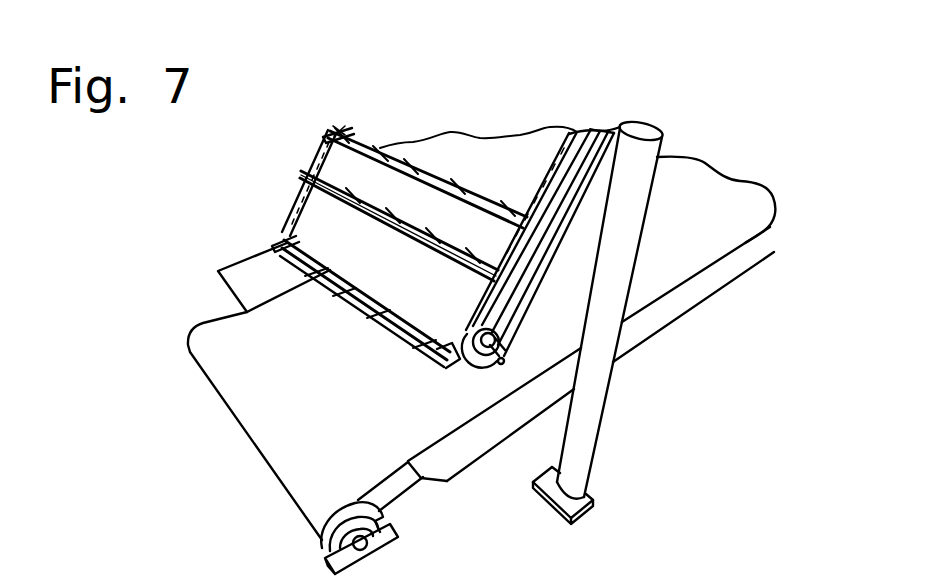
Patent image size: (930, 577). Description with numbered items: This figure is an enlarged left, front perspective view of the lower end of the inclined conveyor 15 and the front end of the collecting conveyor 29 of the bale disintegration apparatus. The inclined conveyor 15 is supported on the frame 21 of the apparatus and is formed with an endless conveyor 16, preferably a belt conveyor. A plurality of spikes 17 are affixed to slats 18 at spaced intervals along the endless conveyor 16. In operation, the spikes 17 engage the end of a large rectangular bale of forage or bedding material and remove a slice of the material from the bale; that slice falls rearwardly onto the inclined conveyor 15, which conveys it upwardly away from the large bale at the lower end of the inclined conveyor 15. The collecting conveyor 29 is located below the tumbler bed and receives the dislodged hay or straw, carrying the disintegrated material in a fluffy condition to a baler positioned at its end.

The inclined conveyor 15 is at (455, 148).
The endless conveyor 16 is at (530, 143).
The spikes 17 is at (383, 150).
The slats 18 is at (397, 325).
The frame 21 is at (593, 380).
The collecting conveyor 29 is at (680, 205).